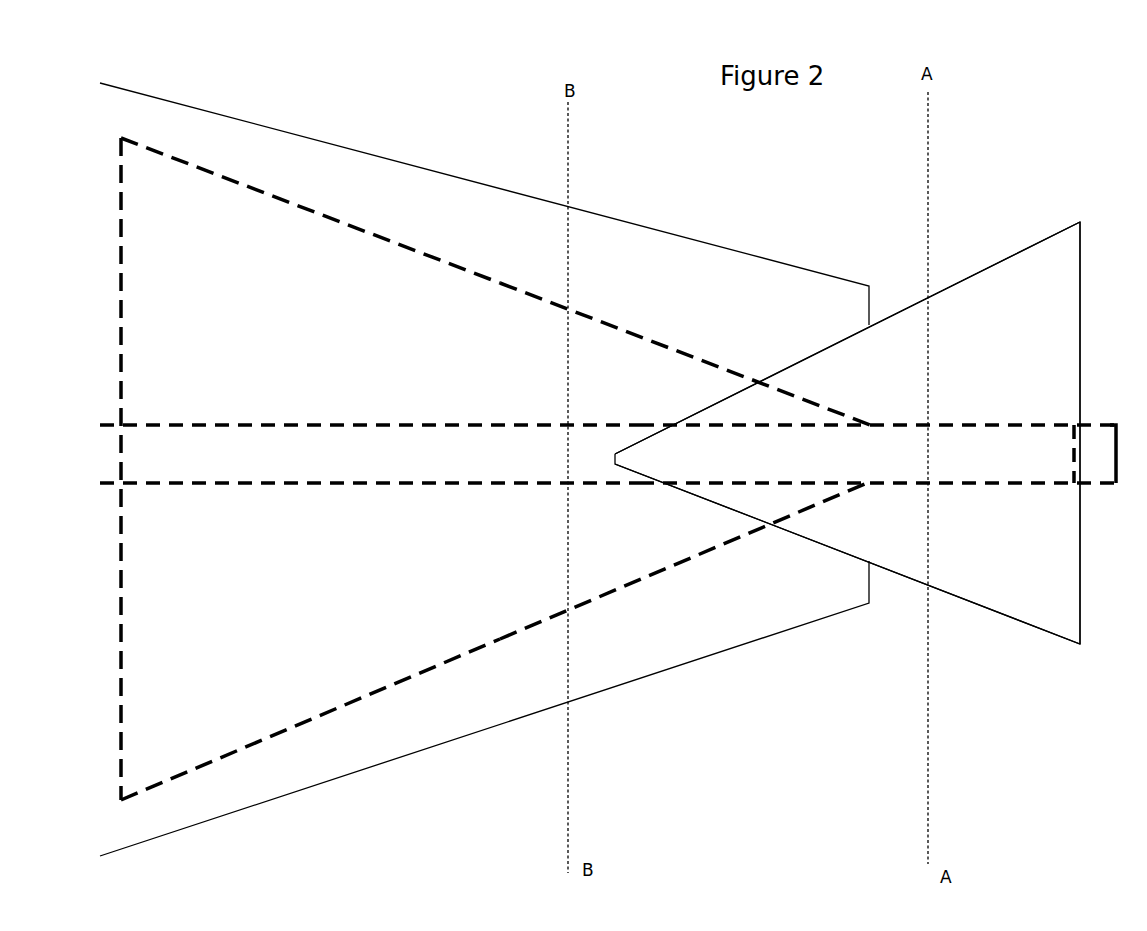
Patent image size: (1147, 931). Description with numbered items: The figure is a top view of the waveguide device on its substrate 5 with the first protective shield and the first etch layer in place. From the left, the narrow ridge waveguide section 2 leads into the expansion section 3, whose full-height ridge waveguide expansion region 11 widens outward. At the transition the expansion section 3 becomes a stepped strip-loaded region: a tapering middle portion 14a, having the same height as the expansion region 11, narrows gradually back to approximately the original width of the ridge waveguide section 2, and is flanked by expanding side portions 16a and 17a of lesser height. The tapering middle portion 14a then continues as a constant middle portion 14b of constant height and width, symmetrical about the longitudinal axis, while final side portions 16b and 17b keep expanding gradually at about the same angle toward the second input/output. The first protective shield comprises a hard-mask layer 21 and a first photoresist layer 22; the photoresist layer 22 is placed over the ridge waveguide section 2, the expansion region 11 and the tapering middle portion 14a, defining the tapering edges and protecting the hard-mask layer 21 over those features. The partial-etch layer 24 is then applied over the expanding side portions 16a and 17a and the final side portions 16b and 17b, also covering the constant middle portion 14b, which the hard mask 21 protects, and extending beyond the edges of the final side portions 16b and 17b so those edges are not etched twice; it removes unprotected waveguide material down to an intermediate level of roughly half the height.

The ridge waveguide section 2 is at (1038, 447).
The expansion section 3 is at (787, 373).
The substrate 5 is at (1001, 170).
The ridge waveguide expansion region 11 is at (802, 494).
The tapering middle portion 14a is at (720, 455).
The constant middle portion 14b is at (110, 457).
The expanding side portion 16a is at (698, 388).
The final side portion 16b is at (338, 268).
The expanding side portion 17a is at (718, 523).
The final side portion 17b is at (286, 663).
The hard-mask layer 21 is at (1105, 470).
The first photoresist layer 22 is at (1056, 606).
The partial-etch layer 24 is at (517, 672).